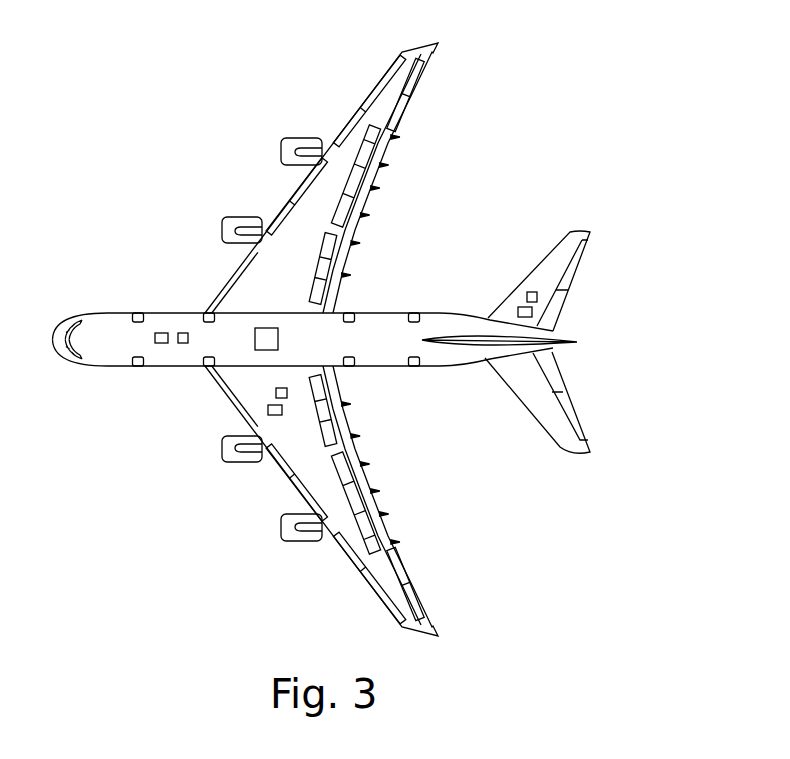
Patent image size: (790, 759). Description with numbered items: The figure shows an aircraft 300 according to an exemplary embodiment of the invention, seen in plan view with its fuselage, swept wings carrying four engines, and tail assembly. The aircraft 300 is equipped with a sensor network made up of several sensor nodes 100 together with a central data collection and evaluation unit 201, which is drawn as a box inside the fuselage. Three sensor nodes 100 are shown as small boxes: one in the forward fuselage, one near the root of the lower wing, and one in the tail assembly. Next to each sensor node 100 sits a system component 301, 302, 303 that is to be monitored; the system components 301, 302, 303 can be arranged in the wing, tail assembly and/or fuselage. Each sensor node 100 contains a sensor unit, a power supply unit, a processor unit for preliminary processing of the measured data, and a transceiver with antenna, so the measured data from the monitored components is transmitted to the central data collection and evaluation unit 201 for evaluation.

The sensor node 100 is at (183, 344).
The central data collection and evaluation unit 201 is at (278, 339).
The aircraft 300 is at (467, 137).
The system component 301 is at (165, 333).
The system component 302 is at (268, 410).
The system component 303 is at (531, 292).